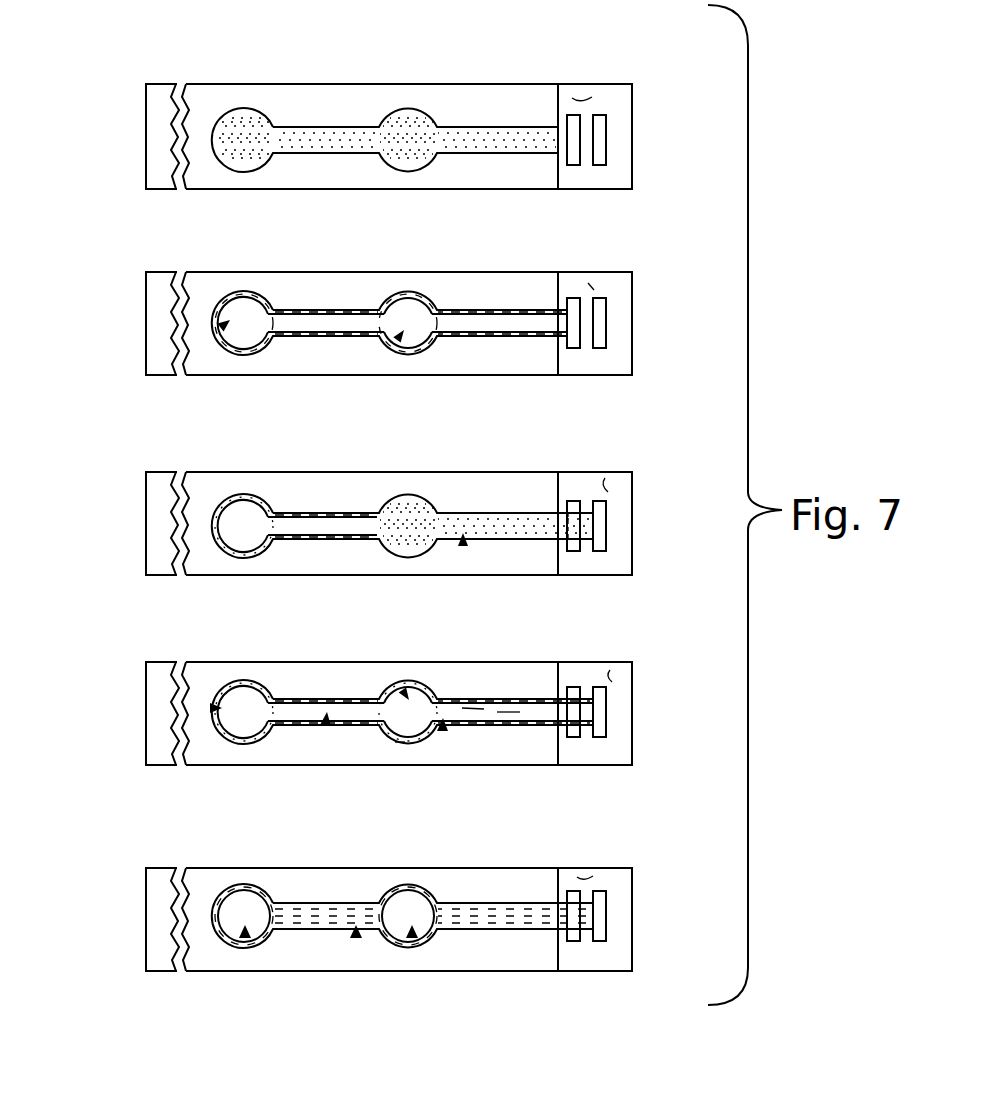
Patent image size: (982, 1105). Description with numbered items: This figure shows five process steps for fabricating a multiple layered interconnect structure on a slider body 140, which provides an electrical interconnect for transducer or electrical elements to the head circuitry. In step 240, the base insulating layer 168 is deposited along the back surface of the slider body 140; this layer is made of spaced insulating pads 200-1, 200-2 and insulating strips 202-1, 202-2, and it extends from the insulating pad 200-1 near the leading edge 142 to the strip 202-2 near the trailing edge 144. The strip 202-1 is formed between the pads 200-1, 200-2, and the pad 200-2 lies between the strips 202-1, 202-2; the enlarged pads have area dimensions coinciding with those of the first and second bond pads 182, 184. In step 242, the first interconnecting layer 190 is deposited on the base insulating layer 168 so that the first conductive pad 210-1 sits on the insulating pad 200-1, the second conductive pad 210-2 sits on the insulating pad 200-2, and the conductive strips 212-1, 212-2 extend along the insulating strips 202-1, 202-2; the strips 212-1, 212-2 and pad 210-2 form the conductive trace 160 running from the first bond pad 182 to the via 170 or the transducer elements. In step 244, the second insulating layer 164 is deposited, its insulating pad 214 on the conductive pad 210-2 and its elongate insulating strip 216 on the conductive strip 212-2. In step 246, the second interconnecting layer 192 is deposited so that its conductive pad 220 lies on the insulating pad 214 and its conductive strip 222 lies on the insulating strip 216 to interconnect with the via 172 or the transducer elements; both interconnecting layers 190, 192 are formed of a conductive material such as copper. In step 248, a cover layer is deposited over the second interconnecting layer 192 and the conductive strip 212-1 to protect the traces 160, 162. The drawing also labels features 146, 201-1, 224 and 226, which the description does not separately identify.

The slider body 140 is at (475, 84).
The leading edge 142 is at (146, 146).
The trailing edge 144 is at (632, 152).
The vent 146 is at (577, 98).
The conductive trace 160 is at (325, 725).
The trace 162 is at (510, 712).
The second insulating layer 164 is at (462, 540).
The base insulating layer 168 is at (340, 127).
The via 170 is at (577, 167).
The via 172 is at (607, 130).
The first bond pad 182 is at (225, 325).
The second bond pad 184 is at (405, 695).
The first interconnecting layer 190 is at (398, 338).
The second interconnecting layer 192 is at (442, 730).
The insulating pad 200-1 is at (242, 110).
The insulating pad 200-2 is at (410, 160).
The first chamber coating 201-1 is at (247, 292).
The insulating strip 202-1 is at (313, 153).
The insulating strip 202-2 is at (463, 153).
The first conductive pad 210-1 is at (243, 323).
The second conductive pad 210-2 is at (422, 332).
The conductive strip 212-1 is at (303, 325).
The conductive strip 212-2 is at (507, 322).
The insulating pad 214 is at (405, 547).
The elongate insulating strip 216 is at (528, 533).
The conductive pad 220 is at (418, 708).
The conductive strip 222 is at (465, 711).
The mixed fluid 224 is at (357, 935).
The mixed fluid in channel 226 is at (517, 922).
The step 240 is at (656, 82).
The step 242 is at (656, 272).
The step 244 is at (648, 465).
The step 246 is at (655, 657).
The step 248 is at (652, 852).